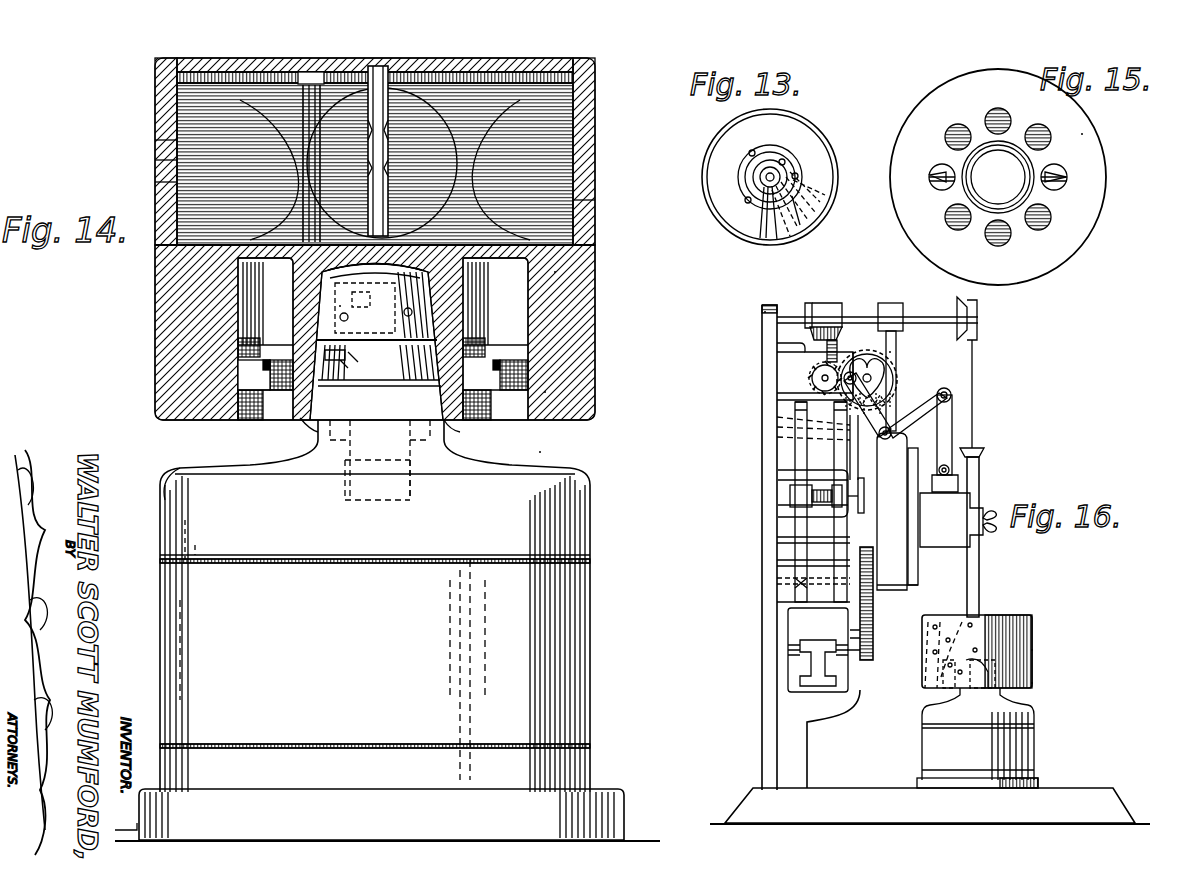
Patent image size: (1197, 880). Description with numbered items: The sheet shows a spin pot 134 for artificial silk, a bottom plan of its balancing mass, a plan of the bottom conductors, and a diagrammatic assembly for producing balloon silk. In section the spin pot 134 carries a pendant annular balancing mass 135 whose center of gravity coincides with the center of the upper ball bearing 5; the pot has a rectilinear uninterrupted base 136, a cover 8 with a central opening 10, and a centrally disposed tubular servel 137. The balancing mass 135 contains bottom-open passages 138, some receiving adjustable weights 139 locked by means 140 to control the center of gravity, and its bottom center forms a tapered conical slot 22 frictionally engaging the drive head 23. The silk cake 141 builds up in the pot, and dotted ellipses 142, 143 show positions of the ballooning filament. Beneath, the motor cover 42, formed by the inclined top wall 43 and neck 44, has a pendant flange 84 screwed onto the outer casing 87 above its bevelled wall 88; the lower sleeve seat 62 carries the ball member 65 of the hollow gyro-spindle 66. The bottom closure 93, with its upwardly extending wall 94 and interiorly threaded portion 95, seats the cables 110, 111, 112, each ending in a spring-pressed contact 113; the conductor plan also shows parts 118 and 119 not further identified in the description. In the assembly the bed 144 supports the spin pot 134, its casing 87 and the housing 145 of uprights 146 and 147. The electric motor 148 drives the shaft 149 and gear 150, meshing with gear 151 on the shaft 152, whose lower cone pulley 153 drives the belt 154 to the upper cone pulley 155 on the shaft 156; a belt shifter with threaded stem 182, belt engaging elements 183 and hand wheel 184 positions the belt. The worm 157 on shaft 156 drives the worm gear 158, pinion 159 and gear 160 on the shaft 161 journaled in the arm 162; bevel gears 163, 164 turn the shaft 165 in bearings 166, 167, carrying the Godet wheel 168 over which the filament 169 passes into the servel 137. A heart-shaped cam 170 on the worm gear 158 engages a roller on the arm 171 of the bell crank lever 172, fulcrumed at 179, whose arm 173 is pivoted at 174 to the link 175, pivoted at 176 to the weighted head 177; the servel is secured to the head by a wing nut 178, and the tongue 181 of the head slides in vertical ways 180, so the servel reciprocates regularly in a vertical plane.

In FIG. 14, the upper ball bearing 5 is at (335, 308).
In FIG. 14, the cover 8 is at (165, 120).
In FIG. 14, the central opening 10 is at (380, 78).
In FIG. 14, the tapered conical slot 22 is at (575, 358).
In FIG. 15, the tapered conical slot 22 is at (998, 177).
In FIG. 14, the drive head 23 is at (316, 340).
In FIG. 14, the motor cover 42 is at (538, 439).
In FIG. 14, the inclined top wall 43 is at (185, 465).
In FIG. 16, the inclined top wall 43 is at (1025, 710).
In FIG. 14, the neck 44 is at (448, 425).
In FIG. 14, the lower sleeve seat 62 is at (345, 482).
In FIG. 14, the ball member 65 is at (300, 418).
In FIG. 14, the gyro-spindle 66 is at (335, 285).
In FIG. 14, the pendant flange 84 is at (375, 538).
In FIG. 16, the pendant flange 84 is at (920, 715).
In FIG. 14, the outer casing 87 is at (375, 670).
In FIG. 16, the outer casing 87 is at (978, 748).
In FIG. 14, the bevelled wall 88 is at (335, 560).
In FIG. 13, the bottom closure 93 is at (780, 130).
In FIG. 14, the upwardly extending flange 94 is at (387, 815).
In FIG. 13, the upwardly extending flange 94 is at (725, 135).
In FIG. 16, the upwardly extending flange 94 is at (920, 780).
In FIG. 13, the interiorly threaded portion 95 is at (738, 128).
In FIG. 13, the cable 110 is at (773, 216).
In FIG. 13, the cable 111 is at (780, 236).
In FIG. 13, the cable 112 is at (812, 202).
In FIG. 13, the contact 113 is at (772, 170).
In FIG. 13, the collar 118 is at (774, 172).
In FIG. 13, the pivot 119 is at (740, 167).
In FIG. 14, the spin pot 134 is at (570, 272).
In FIG. 15, the spin pot 134 is at (945, 84).
In FIG. 16, the spin pot 134 is at (1034, 650).
In FIG. 14, the pendant annular balancing mass 135 is at (560, 385).
In FIG. 15, the pendant annular balancing mass 135 is at (1082, 132).
In FIG. 16, the pendant annular balancing mass 135 is at (1034, 683).
In FIG. 14, the base 136 is at (588, 200).
In FIG. 16, the base 136 is at (975, 612).
In FIG. 14, the servel 137 is at (367, 74).
In FIG. 16, the servel 137 is at (982, 572).
In FIG. 14, the passages 138 is at (240, 378).
In FIG. 15, the passages 138 is at (985, 112).
In FIG. 16, the passages 138 is at (945, 683).
In FIG. 14, the adjustable weights 139 is at (245, 355).
In FIG. 15, the adjustable weights 139 is at (945, 170).
In FIG. 15, the locking means 140 is at (932, 180).
In FIG. 14, the silk cake 141 is at (160, 140).
In FIG. 14, the dotted ellipse 142 is at (160, 160).
In FIG. 14, the dotted ellipse 143 is at (160, 182).
In FIG. 16, the bed 144 is at (930, 806).
In FIG. 16, the housing 145 is at (770, 670).
In FIG. 16, the upright 146 is at (770, 543).
In FIG. 16, the upright 147 is at (812, 558).
In FIG. 16, the electric motor 148 is at (818, 650).
In FIG. 16, the shaft 149 is at (856, 655).
In FIG. 16, the gear 150 is at (878, 640).
In FIG. 16, the gear 151 is at (880, 592).
In FIG. 16, the shaft 152 is at (870, 580).
In FIG. 16, the lower cone pulley 153 is at (795, 588).
In FIG. 16, the belt 154 is at (790, 535).
In FIG. 16, the upper cone pulley 155 is at (800, 410).
In FIG. 16, the shaft 156 is at (775, 403).
In FIG. 16, the worm 157 is at (890, 400).
In FIG. 16, the worm gear 158 is at (892, 352).
In FIG. 16, the pinion 159 is at (810, 375).
In FIG. 16, the gear 160 is at (867, 372).
In FIG. 16, the shaft 161 is at (835, 350).
In FIG. 16, the arm 162 is at (780, 345).
In FIG. 16, the bevel gear 163 is at (822, 300).
In FIG. 16, the bevel gear 164 is at (815, 305).
In FIG. 16, the shaft 165 is at (915, 316).
In FIG. 16, the bearing 166 is at (762, 312).
In FIG. 16, the bearing 167 is at (888, 300).
In FIG. 16, the Godet wheel 168 is at (965, 300).
In FIG. 16, the filament of artificial silk 169 is at (976, 345).
In FIG. 16, the heart-shaped cam 170 is at (880, 380).
In FIG. 16, the arm 171 is at (868, 415).
In FIG. 16, the bell crank lever 172 is at (813, 438).
In FIG. 16, the arm 173 is at (955, 405).
In FIG. 16, the pivot 174 is at (950, 395).
In FIG. 16, the link 175 is at (955, 425).
In FIG. 16, the pivot 176 is at (920, 475).
In FIG. 16, the weighted head 177 is at (951, 520).
In FIG. 16, the wing nut 178 is at (993, 530).
In FIG. 16, the fulcrum 179 is at (980, 448).
In FIG. 16, the vertical ways 180 is at (983, 452).
In FIG. 16, the tongue 181 is at (948, 500).
In FIG. 16, the threaded stem 182 is at (790, 500).
In FIG. 16, the belt engaging elements 183 is at (780, 482).
In FIG. 16, the hand wheel 184 is at (862, 505).